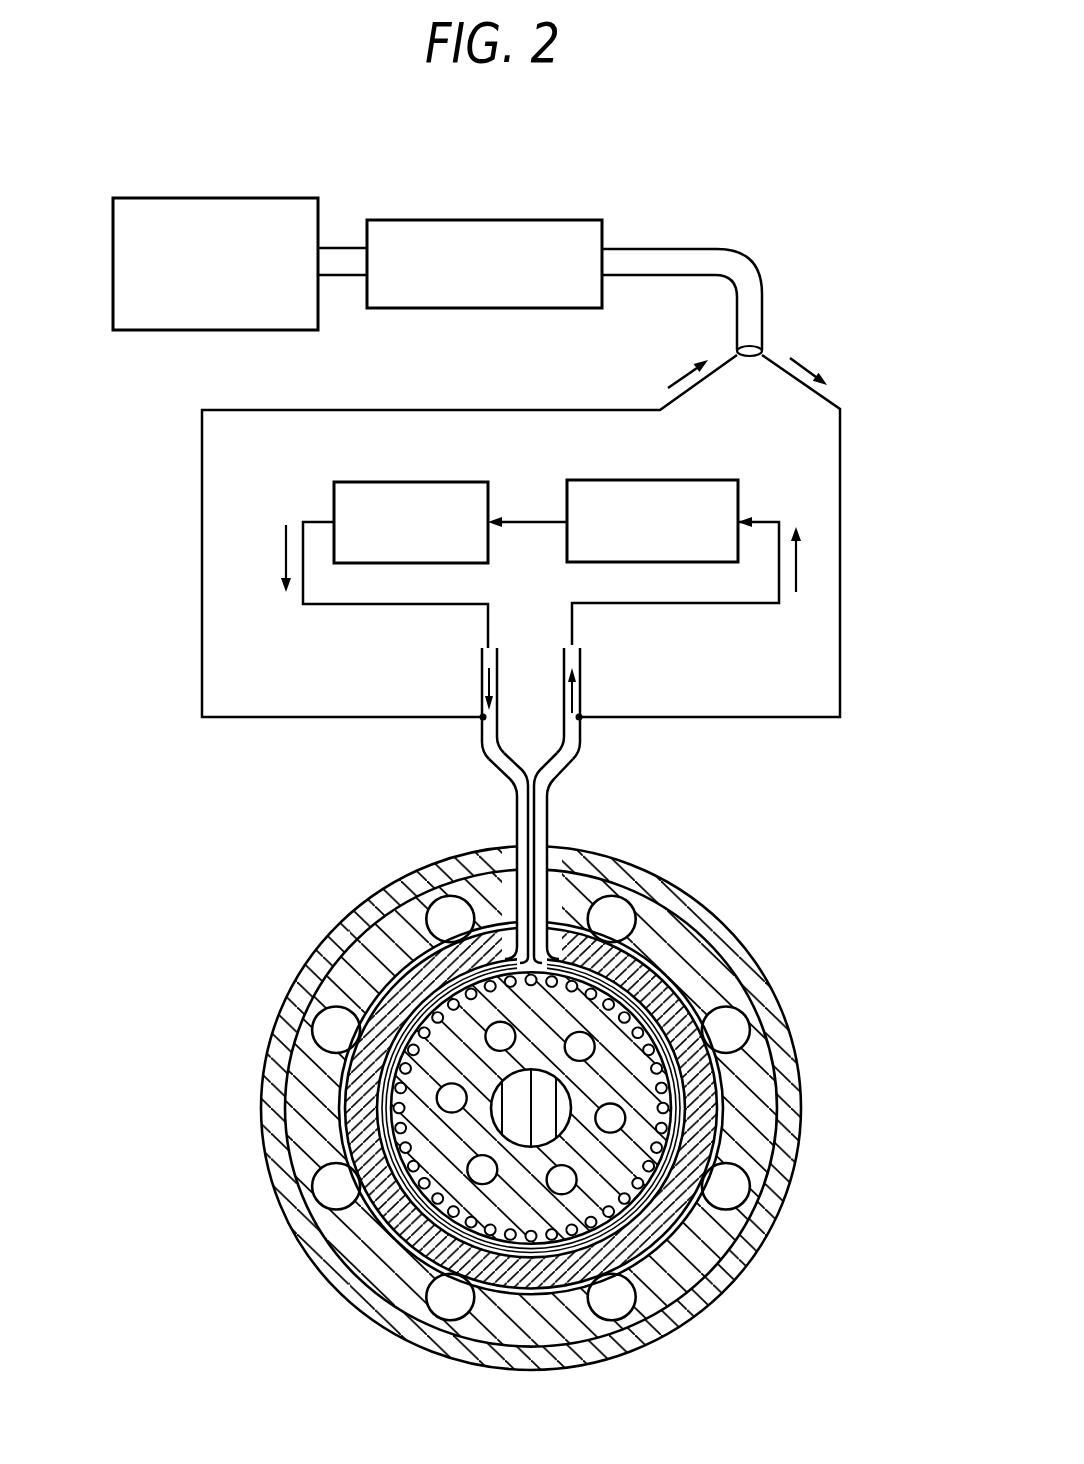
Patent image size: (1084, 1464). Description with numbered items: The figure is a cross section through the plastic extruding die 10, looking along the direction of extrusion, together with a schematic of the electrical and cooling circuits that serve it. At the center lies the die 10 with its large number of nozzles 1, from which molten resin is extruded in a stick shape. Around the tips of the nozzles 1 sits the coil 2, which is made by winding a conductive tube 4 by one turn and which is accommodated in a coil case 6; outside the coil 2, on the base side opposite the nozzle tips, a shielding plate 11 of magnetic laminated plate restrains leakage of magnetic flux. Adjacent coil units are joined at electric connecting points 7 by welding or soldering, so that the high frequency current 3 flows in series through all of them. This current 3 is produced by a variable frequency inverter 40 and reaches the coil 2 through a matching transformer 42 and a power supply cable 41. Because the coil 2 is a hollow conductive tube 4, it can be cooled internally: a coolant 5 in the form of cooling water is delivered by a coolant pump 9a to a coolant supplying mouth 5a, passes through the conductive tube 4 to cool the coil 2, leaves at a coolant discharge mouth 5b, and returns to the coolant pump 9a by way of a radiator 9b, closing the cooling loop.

The nozzles 1 is at (417, 1013).
The coil 2 is at (680, 1103).
The high frequency current 3 is at (797, 360).
The conductive tube 4 is at (497, 753).
The coolant 5 is at (286, 553).
The coolant supplying mouth 5a is at (482, 645).
The coolant discharge mouth 5b is at (572, 645).
The coil case 6 is at (722, 1240).
The electric connecting points 7 is at (483, 717).
The coolant pump 9a is at (408, 482).
The radiator 9b is at (650, 480).
The plastic extruding die 10 is at (623, 1045).
The shielding plate 11 is at (382, 1230).
The variable frequency inverter 40 is at (210, 198).
The power supply cable 41 is at (753, 294).
The matching transformer 42 is at (488, 220).